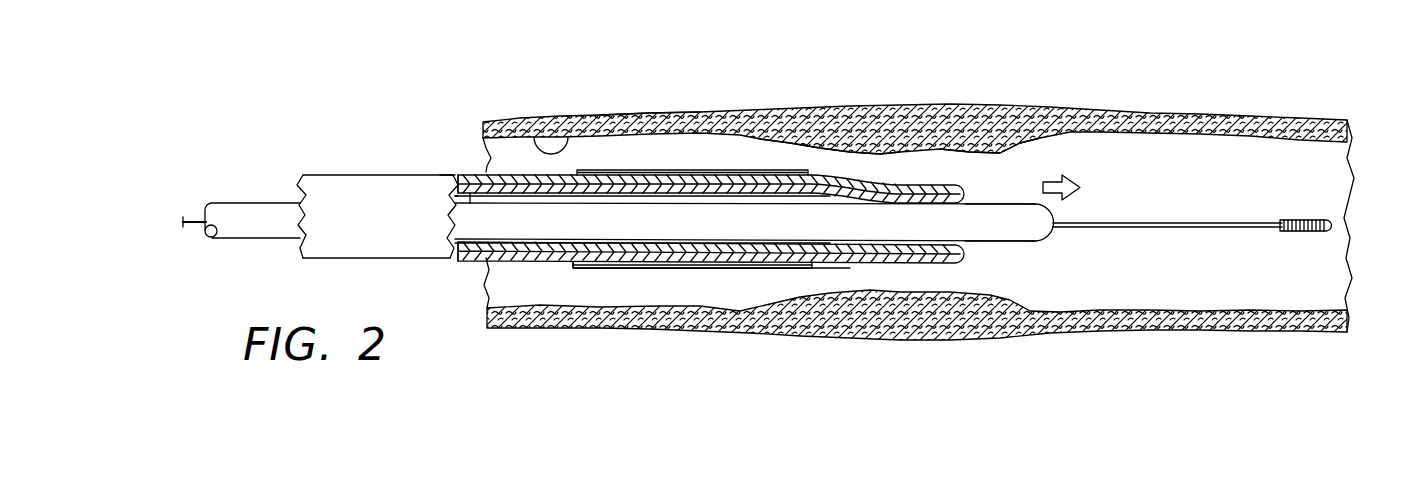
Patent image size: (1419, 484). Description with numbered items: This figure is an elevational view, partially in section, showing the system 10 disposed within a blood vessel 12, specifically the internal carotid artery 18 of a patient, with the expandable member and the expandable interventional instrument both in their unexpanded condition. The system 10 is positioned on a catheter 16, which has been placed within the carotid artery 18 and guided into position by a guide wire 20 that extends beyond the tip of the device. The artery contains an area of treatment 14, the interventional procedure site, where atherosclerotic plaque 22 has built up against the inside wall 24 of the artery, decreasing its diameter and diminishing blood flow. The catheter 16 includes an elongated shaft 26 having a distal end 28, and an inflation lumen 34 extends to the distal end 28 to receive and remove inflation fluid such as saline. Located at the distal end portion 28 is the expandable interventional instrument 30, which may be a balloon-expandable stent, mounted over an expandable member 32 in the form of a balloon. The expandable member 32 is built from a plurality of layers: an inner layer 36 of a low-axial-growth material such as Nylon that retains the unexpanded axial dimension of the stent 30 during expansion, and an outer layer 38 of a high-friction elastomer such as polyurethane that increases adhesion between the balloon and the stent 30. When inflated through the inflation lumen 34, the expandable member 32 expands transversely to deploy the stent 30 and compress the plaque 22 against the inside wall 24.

The system 10 is at (390, 185).
The blood vessel 12 is at (1123, 122).
The area of treatment 14 is at (836, 120).
The catheter 16 is at (263, 233).
The carotid artery 18 is at (640, 126).
The guide wire 20 is at (1302, 220).
The atherosclerotic plaque 22 is at (997, 113).
The inside wall 24 is at (573, 141).
The elongated shaft 26 is at (527, 223).
The distal end 28 is at (1010, 232).
The expandable interventional instrument 30 is at (757, 172).
The expandable member 32 is at (640, 263).
The inflation lumen 34 is at (473, 197).
The layer 36 is at (850, 252).
The layer 38 is at (812, 263).